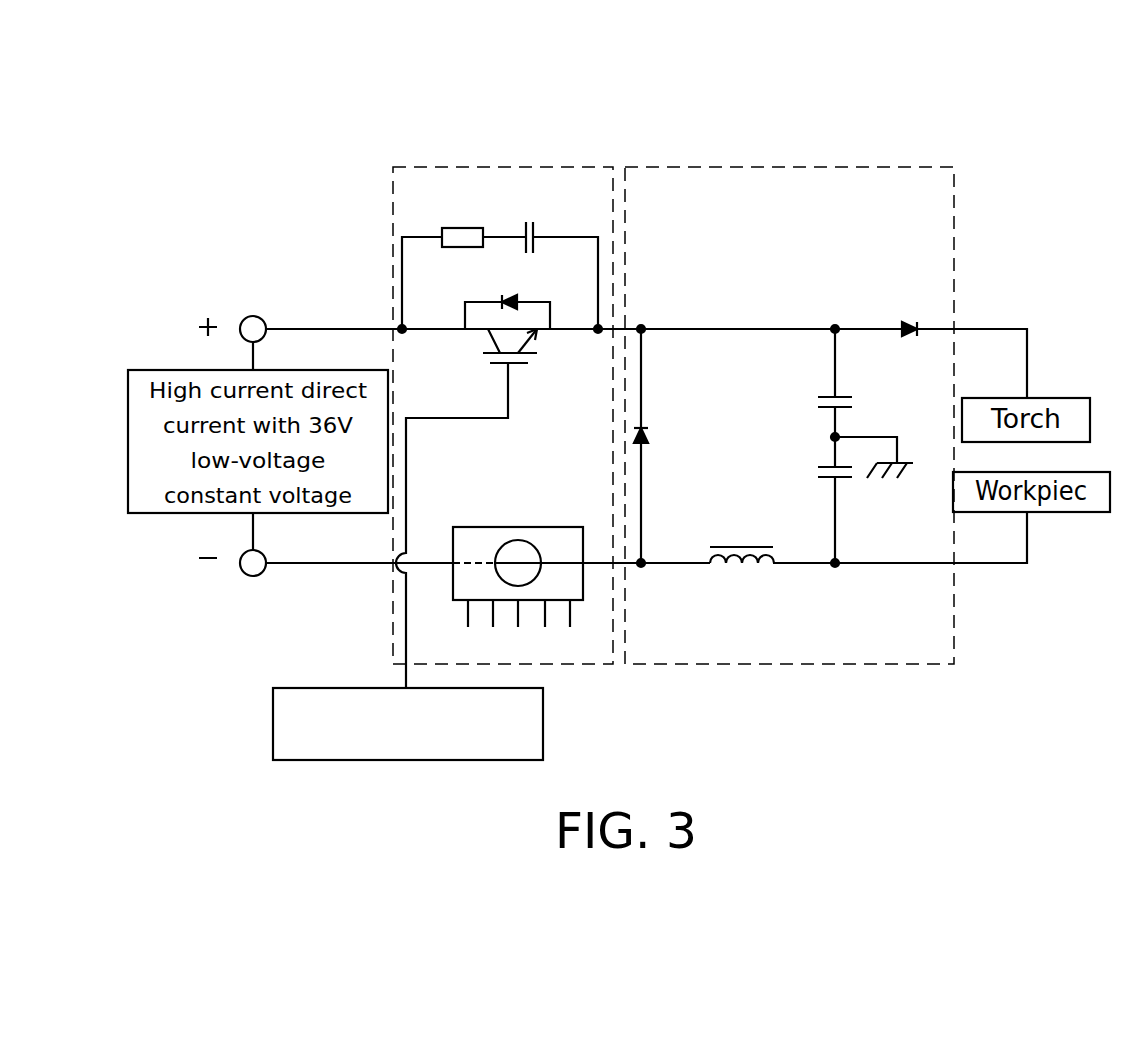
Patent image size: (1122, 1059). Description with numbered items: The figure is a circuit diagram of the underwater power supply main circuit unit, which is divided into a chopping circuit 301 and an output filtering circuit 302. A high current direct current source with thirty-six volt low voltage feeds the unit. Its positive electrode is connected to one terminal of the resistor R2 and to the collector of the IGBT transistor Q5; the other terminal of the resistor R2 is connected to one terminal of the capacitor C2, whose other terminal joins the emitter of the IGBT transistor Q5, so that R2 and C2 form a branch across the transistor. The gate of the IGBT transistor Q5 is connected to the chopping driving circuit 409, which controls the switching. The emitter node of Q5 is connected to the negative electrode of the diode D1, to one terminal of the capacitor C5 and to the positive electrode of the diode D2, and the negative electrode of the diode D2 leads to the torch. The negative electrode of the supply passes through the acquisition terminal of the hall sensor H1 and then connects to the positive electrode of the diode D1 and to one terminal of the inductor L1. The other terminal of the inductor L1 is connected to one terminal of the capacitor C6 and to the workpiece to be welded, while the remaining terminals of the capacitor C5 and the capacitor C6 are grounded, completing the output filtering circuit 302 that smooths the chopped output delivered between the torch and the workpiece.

The chopping circuit 301 is at (477, 167).
The output filtering circuit 302 is at (785, 167).
The chopping driving circuit 409 is at (372, 693).
The resistor R2 is at (462, 214).
The capacitor C2 is at (537, 217).
The IGBT transistor Q5 is at (473, 491).
The hall sensor H1 is at (547, 577).
The diode D1 is at (662, 446).
The inductor L1 is at (742, 580).
The capacitor C5 is at (814, 383).
The capacitor C6 is at (845, 500).
The diode D2 is at (907, 351).